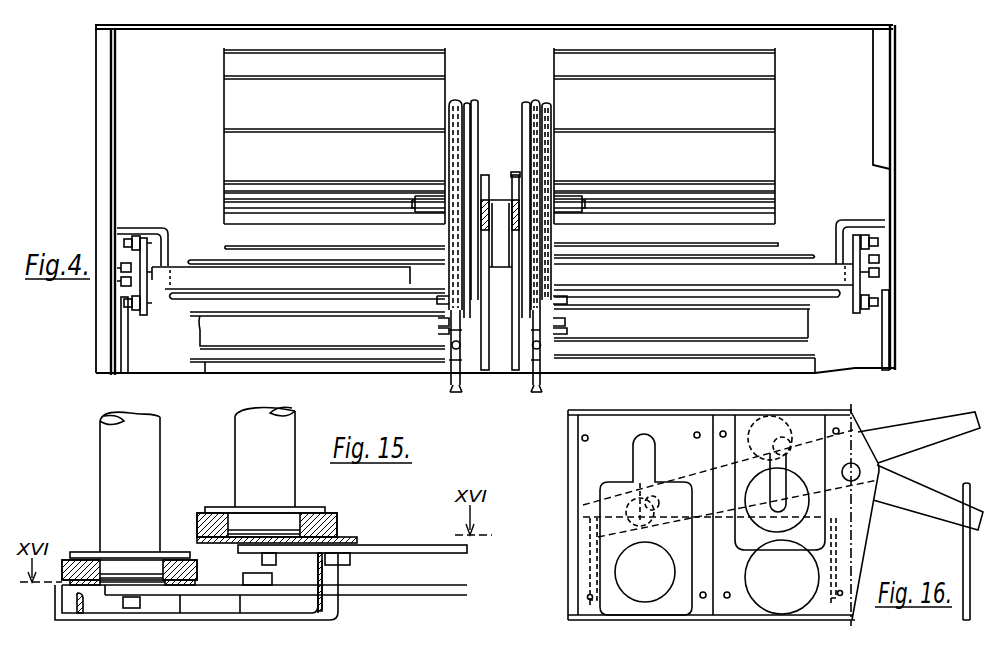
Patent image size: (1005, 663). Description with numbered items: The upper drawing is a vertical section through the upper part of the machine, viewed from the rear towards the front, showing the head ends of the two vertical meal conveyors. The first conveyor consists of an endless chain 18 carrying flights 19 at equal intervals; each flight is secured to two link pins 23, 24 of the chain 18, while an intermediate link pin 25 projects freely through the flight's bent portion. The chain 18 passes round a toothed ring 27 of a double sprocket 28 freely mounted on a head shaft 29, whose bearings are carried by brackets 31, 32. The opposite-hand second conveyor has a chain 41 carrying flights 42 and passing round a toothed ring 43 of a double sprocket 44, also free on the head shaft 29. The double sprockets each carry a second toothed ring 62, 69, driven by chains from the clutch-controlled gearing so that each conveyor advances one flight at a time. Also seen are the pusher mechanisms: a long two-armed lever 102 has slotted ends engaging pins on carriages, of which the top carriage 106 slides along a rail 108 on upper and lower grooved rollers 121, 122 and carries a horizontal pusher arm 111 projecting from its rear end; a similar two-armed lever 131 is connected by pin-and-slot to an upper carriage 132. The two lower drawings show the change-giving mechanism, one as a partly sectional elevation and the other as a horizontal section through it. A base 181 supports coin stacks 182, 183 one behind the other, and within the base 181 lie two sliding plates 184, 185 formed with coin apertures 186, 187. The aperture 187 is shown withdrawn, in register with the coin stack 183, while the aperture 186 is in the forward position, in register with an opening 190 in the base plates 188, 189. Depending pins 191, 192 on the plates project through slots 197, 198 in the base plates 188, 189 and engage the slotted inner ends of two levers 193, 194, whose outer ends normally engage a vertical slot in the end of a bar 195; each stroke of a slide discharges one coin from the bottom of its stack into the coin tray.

In FIG. 4, the endless chain 18 is at (540, 388).
In FIG. 4, the flights 19 is at (774, 245).
In FIG. 4, the link pin 23 is at (566, 300).
In FIG. 4, the link pin 24 is at (568, 331).
In FIG. 4, the intermediate link pin 25 is at (566, 325).
In FIG. 4, the toothed ring 27 is at (548, 115).
In FIG. 4, the double sprocket 28 is at (537, 104).
In FIG. 4, the head shaft 29 is at (499, 196).
In FIG. 4, the bracket 31 is at (518, 174).
In FIG. 4, the bracket 32 is at (487, 176).
In FIG. 4, the chain 41 is at (456, 388).
In FIG. 4, the flights 42 is at (230, 248).
In FIG. 4, the toothed ring 43 is at (452, 100).
In FIG. 4, the double sprocket 44 is at (467, 103).
In FIG. 4, the second toothed ring 62 is at (527, 102).
In FIG. 4, the second toothed ring 69 is at (476, 100).
In FIG. 4, the two-armed lever 102 is at (886, 337).
In FIG. 4, the carriage 106 is at (856, 234).
In FIG. 4, the rail 108 is at (869, 277).
In FIG. 4, the pusher arm 111 is at (823, 361).
In FIG. 4, the upper grooved rollers 121 is at (879, 244).
In FIG. 4, the lower grooved rollers 122 is at (879, 306).
In FIG. 4, the two-armed lever 131 is at (128, 363).
In FIG. 4, the carriage 132 is at (143, 238).
In FIG. 16, the base 181 is at (583, 459).
In FIG. 15, the coin stack 182 is at (145, 497).
In FIG. 15, the coin stack 183 is at (283, 449).
In FIG. 15, the sliding plate 184 is at (97, 580).
In FIG. 16, the sliding plate 184 is at (605, 579).
In FIG. 15, the sliding plate 185 is at (229, 537).
In FIG. 16, the sliding plate 185 is at (738, 438).
In FIG. 16, the coin aperture 186 is at (617, 562).
In FIG. 16, the coin aperture 187 is at (766, 532).
In FIG. 15, the base plate 188 is at (76, 562).
In FIG. 15, the base plate 189 is at (337, 540).
In FIG. 16, the opening 190 is at (805, 588).
In FIG. 15, the depending pin 191 is at (135, 600).
In FIG. 16, the depending pin 191 is at (585, 518).
In FIG. 15, the depending pin 192 is at (262, 562).
In FIG. 16, the depending pin 192 is at (852, 412).
In FIG. 16, the lever 193 is at (906, 432).
In FIG. 16, the lever 194 is at (925, 497).
In FIG. 16, the bar 195 is at (963, 547).
In FIG. 16, the slot 197 is at (632, 462).
In FIG. 16, the slot 198 is at (780, 512).